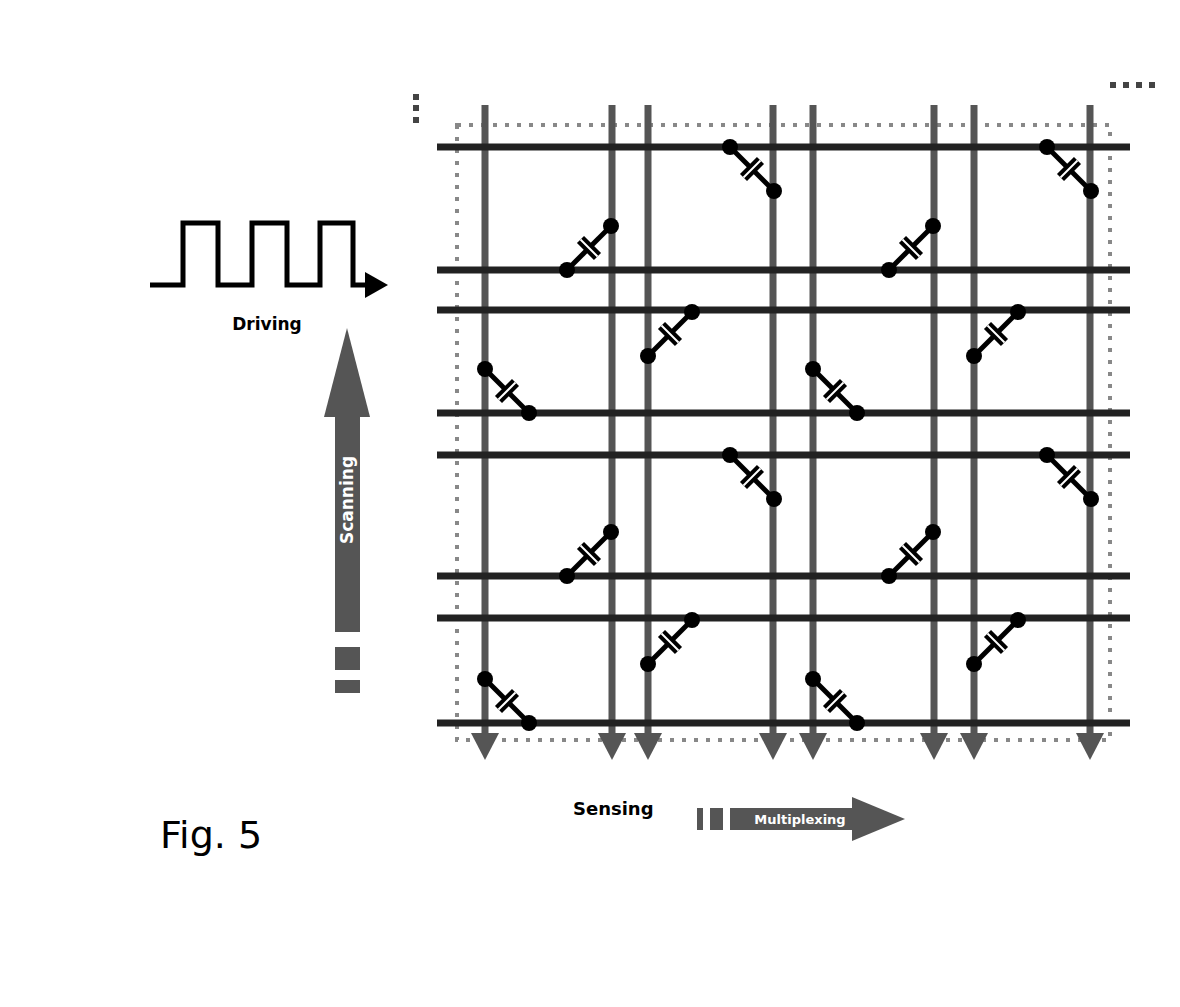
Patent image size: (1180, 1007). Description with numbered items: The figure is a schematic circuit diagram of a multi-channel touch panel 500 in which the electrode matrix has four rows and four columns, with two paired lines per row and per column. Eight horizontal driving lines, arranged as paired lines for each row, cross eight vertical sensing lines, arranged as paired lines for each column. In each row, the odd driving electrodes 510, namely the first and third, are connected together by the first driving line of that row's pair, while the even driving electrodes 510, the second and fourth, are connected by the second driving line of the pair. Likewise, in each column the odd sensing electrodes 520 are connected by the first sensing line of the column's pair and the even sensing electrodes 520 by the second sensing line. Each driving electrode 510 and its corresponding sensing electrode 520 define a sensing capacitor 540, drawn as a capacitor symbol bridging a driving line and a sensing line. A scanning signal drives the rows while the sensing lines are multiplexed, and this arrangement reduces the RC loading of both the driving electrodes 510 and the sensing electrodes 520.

The multi-channel touch panel 500 is at (801, 54).
The driving electrode 510 is at (529, 729).
The sensing electrode 520 is at (485, 680).
The sensing capacitor 540 is at (493, 712).